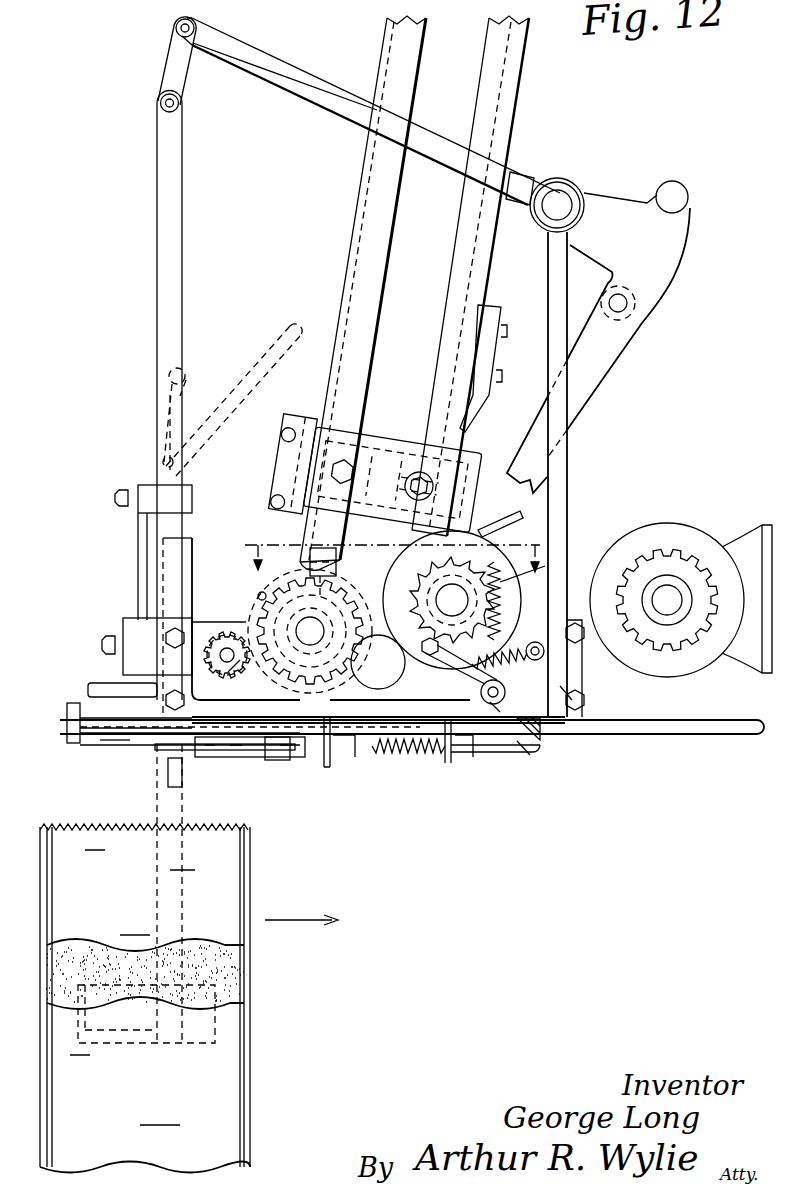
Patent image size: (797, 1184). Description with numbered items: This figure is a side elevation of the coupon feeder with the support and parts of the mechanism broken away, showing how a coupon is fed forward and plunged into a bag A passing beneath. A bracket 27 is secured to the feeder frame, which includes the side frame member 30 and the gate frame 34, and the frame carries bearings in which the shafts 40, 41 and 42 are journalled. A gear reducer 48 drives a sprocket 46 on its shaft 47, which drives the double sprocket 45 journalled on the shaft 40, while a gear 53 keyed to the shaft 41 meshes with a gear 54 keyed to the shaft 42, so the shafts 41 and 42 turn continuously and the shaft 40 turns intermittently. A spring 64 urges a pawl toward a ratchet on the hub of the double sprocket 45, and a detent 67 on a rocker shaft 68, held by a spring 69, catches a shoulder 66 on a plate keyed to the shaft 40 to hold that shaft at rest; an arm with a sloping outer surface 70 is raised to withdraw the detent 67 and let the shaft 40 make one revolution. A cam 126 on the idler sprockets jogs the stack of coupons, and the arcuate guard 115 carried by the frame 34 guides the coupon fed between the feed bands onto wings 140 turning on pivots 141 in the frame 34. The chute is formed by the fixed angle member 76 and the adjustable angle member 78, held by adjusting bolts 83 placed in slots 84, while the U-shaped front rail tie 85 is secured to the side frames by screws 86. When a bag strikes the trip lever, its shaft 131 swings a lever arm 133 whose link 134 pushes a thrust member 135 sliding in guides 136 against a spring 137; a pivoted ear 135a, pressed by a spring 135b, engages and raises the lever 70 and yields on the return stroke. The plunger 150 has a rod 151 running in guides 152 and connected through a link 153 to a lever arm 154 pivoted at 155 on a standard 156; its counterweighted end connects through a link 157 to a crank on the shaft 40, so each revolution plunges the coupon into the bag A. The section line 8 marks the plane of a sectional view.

The section line 8- 8 is at (386, 545).
The bracket 27 is at (695, 736).
The side frame member 30 is at (305, 514).
The gate frame 34 is at (67, 714).
The shaft 40 is at (495, 542).
The shaft 41 is at (312, 629).
The shaft 42 is at (228, 652).
The double sprocket 45 is at (545, 573).
The sprocket 46 is at (672, 565).
The shaft of gear reducer 47 is at (665, 605).
The gear reducer 48 is at (663, 526).
The gear 53 is at (262, 592).
The gear 54 is at (235, 672).
The spring 64 is at (504, 600).
The shoulder 66 is at (428, 672).
The detent 67 is at (470, 672).
The rocker shaft 68 is at (497, 706).
The spring 69 is at (538, 648).
The lever with sloping outer surface 70 is at (566, 686).
The forward fixed angle member 76 is at (372, 217).
The adjustable angle member 78 is at (465, 247).
The adjusting bolts 83 is at (428, 470).
The slots 84 is at (398, 470).
The front rail tie 85 is at (300, 462).
The screws 86 is at (348, 455).
The arcuate guard 115 is at (278, 762).
The cam 126 is at (295, 600).
The shaft 131 is at (170, 778).
The lever arm 133 is at (160, 748).
The link 134 is at (230, 760).
The thrust member 135 is at (328, 766).
The pivoted ear 135a is at (545, 742).
The spring 135b is at (525, 748).
The guides 136 is at (345, 775).
The spring 137 is at (405, 760).
The wings 140 is at (100, 742).
The pivots 141 is at (80, 738).
The plunger 150 is at (88, 690).
The rod 151 is at (178, 300).
The guides 152 is at (143, 515).
The link 153 is at (178, 72).
The lever arm 154 is at (316, 96).
The pivot 155 is at (557, 205).
The standard 156 is at (562, 482).
The link 157 is at (580, 406).
The bag A is at (214, 1098).